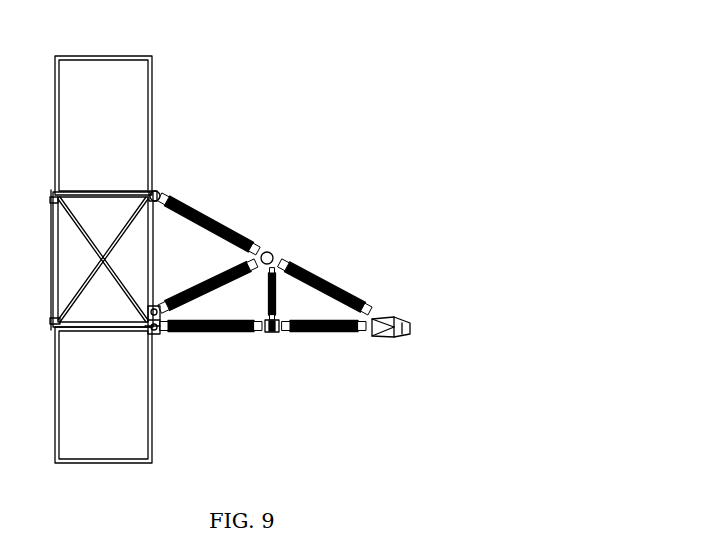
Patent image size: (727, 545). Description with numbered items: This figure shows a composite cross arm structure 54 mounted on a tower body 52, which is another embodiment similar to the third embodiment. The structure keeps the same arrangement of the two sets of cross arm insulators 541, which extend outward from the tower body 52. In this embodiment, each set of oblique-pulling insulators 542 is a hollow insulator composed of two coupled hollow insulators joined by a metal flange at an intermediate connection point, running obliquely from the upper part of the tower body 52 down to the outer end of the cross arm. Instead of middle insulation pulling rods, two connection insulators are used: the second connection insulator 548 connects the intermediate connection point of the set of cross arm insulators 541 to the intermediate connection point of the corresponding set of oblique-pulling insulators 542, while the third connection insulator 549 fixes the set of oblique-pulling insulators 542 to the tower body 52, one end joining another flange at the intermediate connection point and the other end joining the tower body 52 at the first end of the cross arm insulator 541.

The tower body 52 is at (217, 246).
The composite cross arm structure 54 is at (330, 355).
The set of oblique-pulling insulators 542 is at (300, 262).
The second connection insulator 548 is at (355, 278).
The third connection insulator 549 is at (262, 334).
The set of cross arm insulators 541 is at (233, 375).